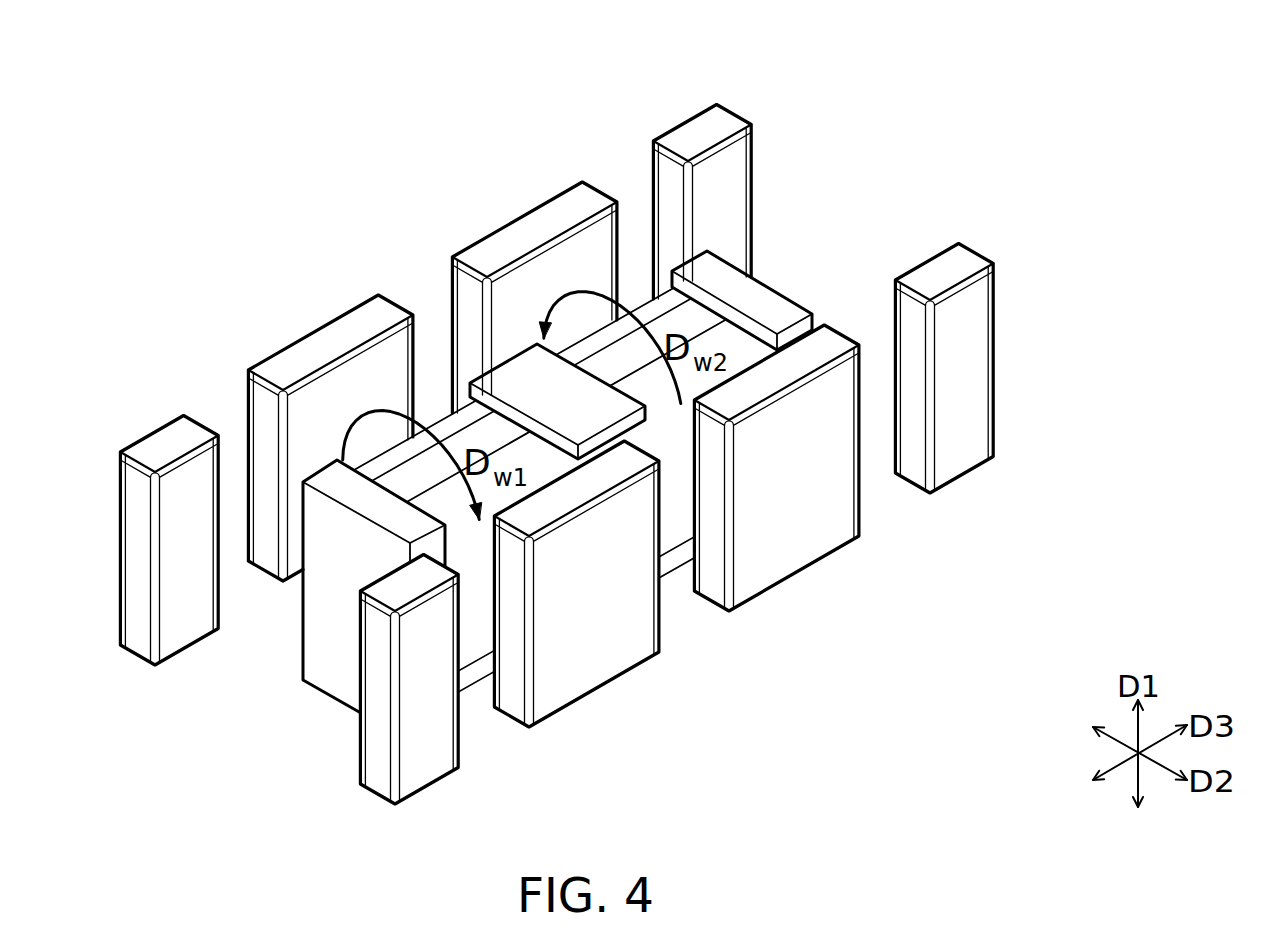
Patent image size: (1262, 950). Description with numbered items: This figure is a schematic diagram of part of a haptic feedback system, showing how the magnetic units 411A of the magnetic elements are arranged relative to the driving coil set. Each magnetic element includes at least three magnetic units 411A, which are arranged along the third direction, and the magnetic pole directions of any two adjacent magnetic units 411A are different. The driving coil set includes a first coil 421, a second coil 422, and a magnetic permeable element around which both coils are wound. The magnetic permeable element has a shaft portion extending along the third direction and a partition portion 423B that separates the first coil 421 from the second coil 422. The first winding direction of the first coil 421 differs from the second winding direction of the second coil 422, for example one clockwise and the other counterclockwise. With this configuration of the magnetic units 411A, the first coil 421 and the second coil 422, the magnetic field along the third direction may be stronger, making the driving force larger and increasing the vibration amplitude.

The magnetic unit 411A is at (618, 428).
The first coil 421 is at (412, 473).
The second coil 422 is at (703, 310).
The partition portion 423B is at (525, 377).